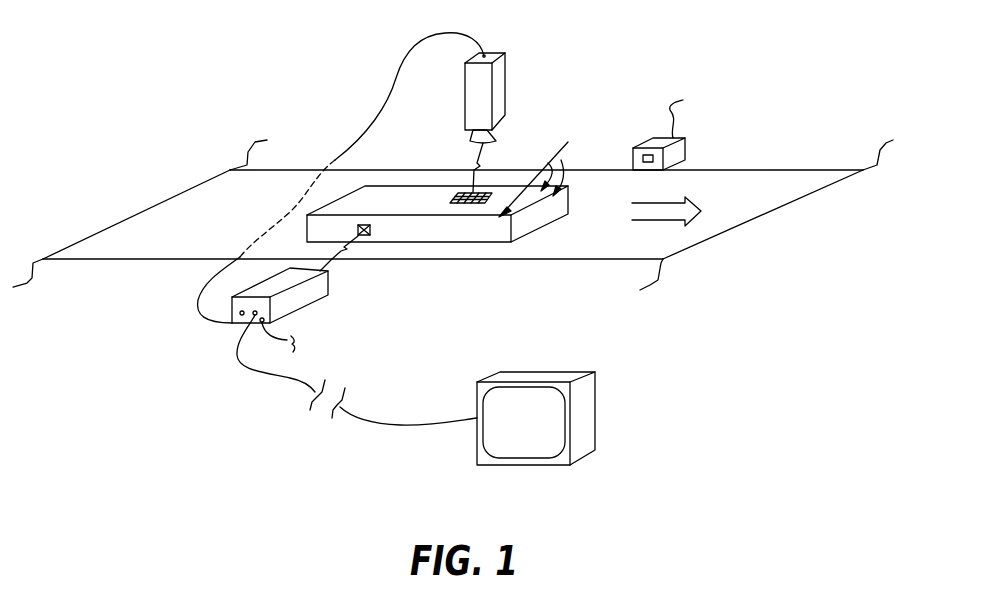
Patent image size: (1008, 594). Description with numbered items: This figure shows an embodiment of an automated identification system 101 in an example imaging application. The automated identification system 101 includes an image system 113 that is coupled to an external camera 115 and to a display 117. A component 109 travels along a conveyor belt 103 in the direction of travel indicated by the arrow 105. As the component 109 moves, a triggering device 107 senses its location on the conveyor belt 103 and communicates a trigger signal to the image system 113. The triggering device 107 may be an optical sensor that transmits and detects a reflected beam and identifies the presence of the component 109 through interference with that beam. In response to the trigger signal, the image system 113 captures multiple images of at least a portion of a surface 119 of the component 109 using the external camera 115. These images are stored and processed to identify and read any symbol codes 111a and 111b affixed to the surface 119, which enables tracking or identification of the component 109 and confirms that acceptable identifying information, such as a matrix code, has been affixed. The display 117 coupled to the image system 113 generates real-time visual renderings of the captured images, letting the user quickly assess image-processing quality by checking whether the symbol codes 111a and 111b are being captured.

The automated identification system 101 is at (194, 129).
The conveyor belt 103 is at (185, 243).
The arrow indicating direction of travel 105 is at (701, 206).
The triggering device 107 is at (686, 147).
The component 109 is at (547, 227).
The symbol code 111a is at (372, 229).
The symbol code 111b is at (448, 199).
The image system 113 is at (329, 283).
The external camera 115 is at (505, 68).
The display 117 is at (595, 410).
The surface 119 is at (546, 169).